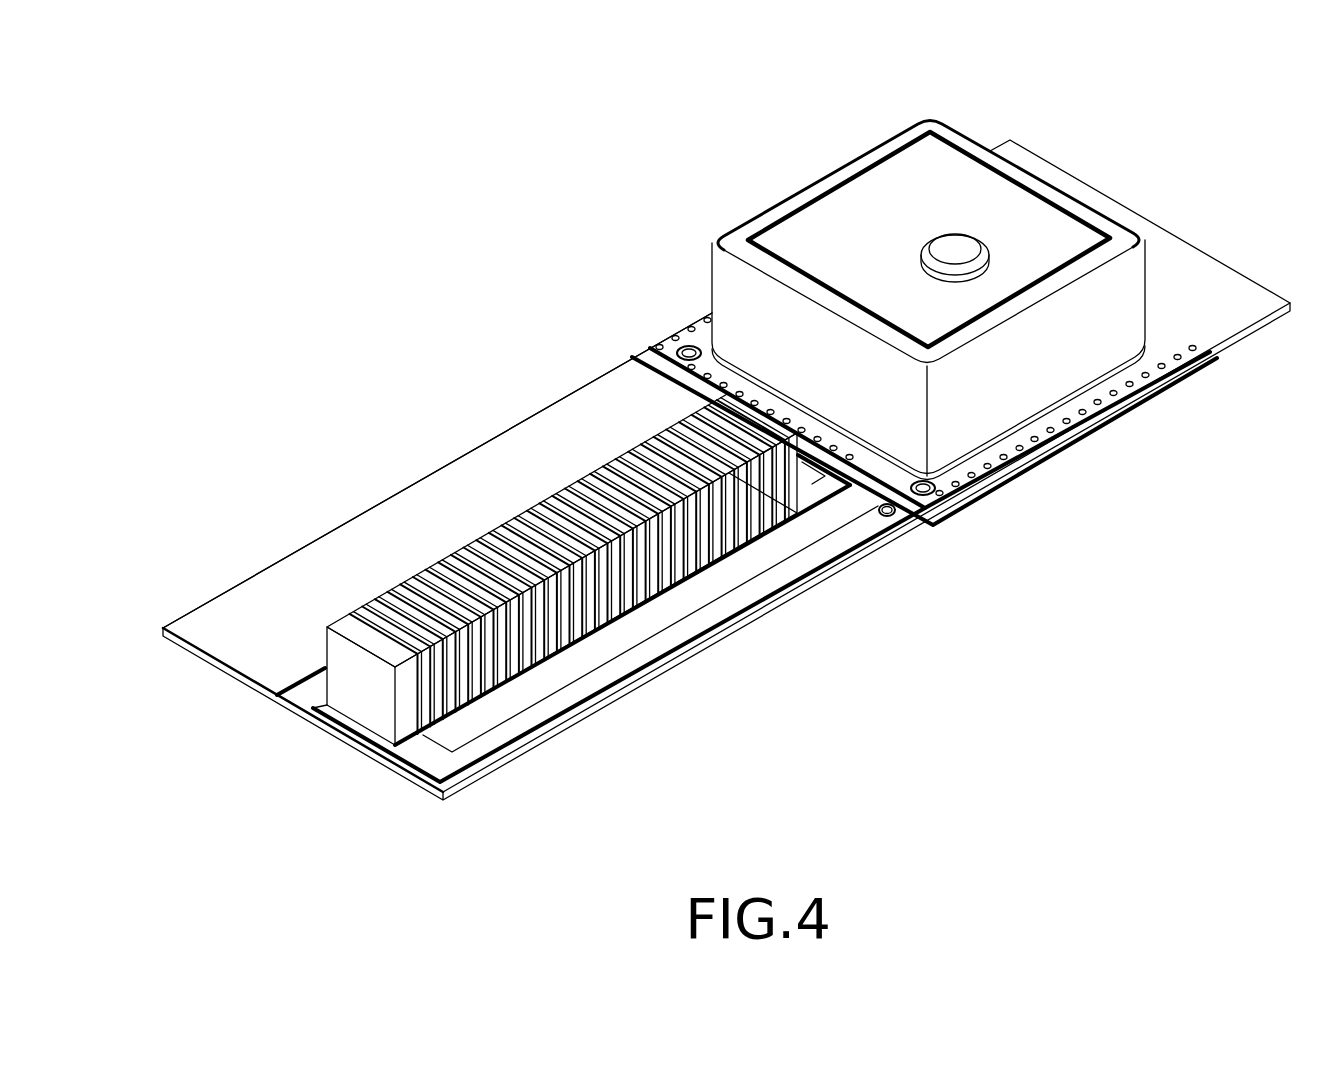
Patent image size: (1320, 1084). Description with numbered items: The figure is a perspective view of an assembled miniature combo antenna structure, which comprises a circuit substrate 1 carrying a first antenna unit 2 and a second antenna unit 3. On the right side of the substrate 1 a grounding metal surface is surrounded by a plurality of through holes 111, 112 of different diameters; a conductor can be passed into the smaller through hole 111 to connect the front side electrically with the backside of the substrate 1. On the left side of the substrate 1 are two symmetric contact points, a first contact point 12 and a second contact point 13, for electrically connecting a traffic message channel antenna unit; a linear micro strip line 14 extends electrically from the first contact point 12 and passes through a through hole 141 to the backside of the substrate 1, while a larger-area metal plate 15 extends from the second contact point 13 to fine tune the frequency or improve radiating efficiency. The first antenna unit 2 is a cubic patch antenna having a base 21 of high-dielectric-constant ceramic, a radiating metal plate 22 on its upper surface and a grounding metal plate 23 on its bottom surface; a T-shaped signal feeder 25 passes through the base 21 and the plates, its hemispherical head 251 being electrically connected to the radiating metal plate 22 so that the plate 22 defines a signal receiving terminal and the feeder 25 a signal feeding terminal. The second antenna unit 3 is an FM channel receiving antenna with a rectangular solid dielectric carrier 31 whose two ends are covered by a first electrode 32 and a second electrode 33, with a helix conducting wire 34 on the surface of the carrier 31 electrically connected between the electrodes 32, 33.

The circuit substrate 1 is at (1195, 272).
The metal plate 15 is at (390, 530).
The through hole 111 is at (1140, 390).
The through hole 112 is at (689, 350).
The first contact point 12 is at (313, 707).
The second contact point 13 is at (805, 503).
The micro strip line 14 is at (668, 640).
The through hole 141 is at (895, 515).
The first antenna unit 2 is at (1086, 194).
The base 21 is at (948, 165).
The radiating metal plate 22 is at (1020, 178).
The grounding metal plate 23 is at (1040, 412).
The signal feeder 25 is at (931, 237).
The hemispherical head 251 is at (942, 245).
The second antenna unit 3 is at (352, 605).
The carrier 31 is at (533, 528).
The first electrode 32 is at (350, 682).
The second electrode 33 is at (700, 388).
The helix conducting wire 34 is at (470, 540).